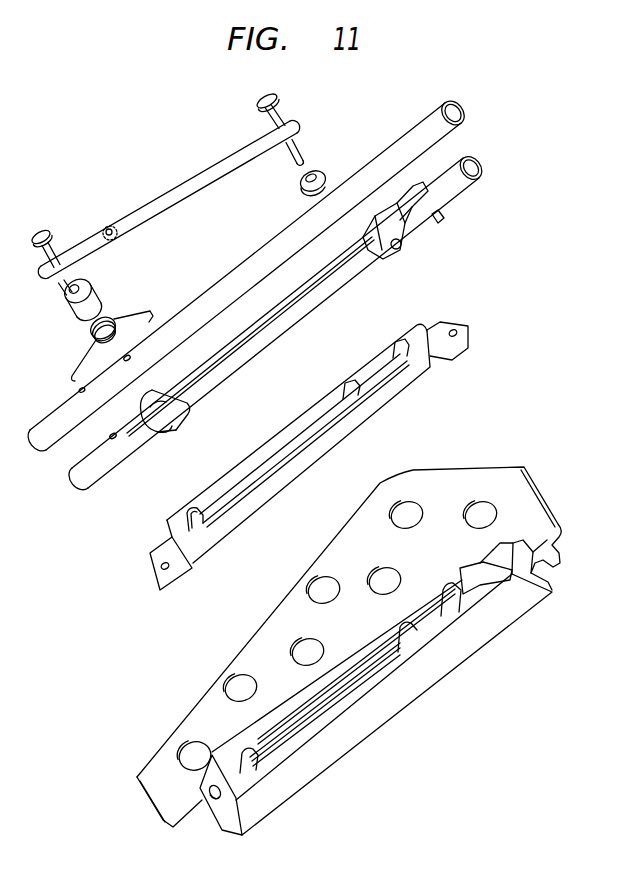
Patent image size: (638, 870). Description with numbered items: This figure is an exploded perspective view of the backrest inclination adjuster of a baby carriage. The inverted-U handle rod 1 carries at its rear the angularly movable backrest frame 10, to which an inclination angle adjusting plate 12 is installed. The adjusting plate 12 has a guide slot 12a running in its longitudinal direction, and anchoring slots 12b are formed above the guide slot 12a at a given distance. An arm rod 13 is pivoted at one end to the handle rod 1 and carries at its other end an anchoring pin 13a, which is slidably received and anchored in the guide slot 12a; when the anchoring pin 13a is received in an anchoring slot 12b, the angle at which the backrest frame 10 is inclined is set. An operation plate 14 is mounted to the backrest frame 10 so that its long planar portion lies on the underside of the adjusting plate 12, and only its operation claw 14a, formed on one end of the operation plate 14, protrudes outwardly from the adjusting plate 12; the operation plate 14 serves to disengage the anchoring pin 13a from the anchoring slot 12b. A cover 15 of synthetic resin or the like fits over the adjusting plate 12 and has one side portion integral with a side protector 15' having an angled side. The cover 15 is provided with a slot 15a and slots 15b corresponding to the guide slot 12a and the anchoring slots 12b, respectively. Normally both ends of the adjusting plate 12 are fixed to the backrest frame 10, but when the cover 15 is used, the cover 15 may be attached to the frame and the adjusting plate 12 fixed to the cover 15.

The handle rod 1 is at (416, 143).
The backrest frame 10 is at (462, 186).
The inclination angle adjusting plate 12 is at (282, 428).
The guide slot 12a is at (308, 433).
The anchoring slot 12b is at (351, 380).
The arm rod 13 is at (151, 198).
The anchoring pin 13a is at (297, 142).
The operation plate 14 is at (289, 303).
The operation claw 14a is at (402, 237).
The cover 15 is at (376, 689).
The side protector 15' is at (349, 647).
The slot 15a is at (343, 695).
The slot 15b is at (400, 622).